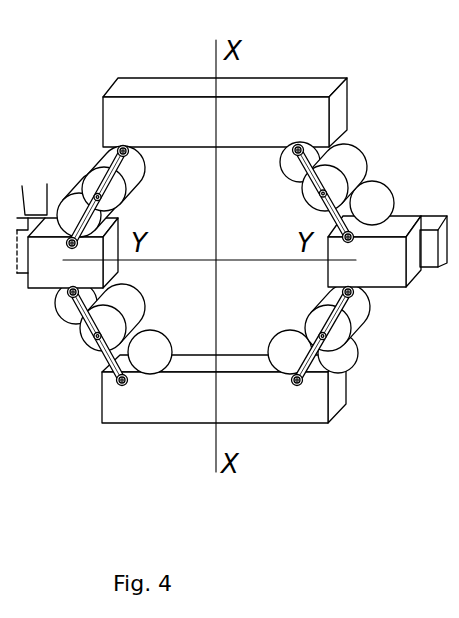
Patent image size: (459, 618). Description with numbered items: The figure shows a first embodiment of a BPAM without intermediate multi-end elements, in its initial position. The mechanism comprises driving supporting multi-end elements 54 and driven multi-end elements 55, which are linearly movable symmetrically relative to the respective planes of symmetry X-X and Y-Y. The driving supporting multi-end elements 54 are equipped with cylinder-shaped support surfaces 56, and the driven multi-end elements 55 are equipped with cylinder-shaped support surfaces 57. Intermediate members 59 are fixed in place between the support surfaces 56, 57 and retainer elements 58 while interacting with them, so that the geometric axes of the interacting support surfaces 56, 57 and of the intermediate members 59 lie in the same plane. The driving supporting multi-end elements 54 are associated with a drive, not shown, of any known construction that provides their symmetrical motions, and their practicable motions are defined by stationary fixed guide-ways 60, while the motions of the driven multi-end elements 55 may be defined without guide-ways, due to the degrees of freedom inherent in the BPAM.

The driving supporting multi-end element 54 is at (63, 214).
The driven multi-end element 55 is at (168, 122).
The cylinder-shaped support surface 56 is at (71, 209).
The cylinder-shaped support surface 57 is at (108, 161).
The retainer element 58 is at (82, 204).
The intermediate member 59 is at (95, 192).
The stationary fixed guide-way 60 is at (424, 214).